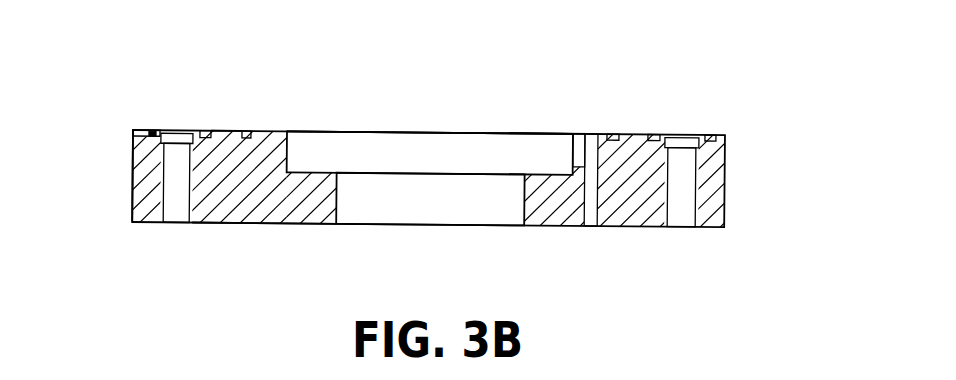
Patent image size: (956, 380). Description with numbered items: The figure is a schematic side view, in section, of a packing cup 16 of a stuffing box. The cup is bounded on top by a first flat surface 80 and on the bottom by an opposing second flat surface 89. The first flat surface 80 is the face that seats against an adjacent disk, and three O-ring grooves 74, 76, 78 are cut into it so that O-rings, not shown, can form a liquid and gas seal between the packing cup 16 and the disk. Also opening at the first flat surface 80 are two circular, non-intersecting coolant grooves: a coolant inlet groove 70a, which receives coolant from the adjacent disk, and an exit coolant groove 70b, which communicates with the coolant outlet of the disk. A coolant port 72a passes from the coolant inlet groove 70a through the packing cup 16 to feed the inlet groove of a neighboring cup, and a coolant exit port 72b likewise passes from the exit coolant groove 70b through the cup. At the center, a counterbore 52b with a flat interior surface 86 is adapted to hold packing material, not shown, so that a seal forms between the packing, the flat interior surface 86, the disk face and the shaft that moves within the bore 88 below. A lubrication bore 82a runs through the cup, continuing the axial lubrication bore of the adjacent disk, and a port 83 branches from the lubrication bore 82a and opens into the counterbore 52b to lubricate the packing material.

The packing cup 16 is at (753, 175).
The O-ring groove 74 is at (134, 138).
The exit coolant groove 70b is at (173, 134).
The coolant exit port 72b is at (177, 208).
The O-ring groove 76 is at (202, 130).
The first flat surface 80 is at (228, 129).
The O-ring groove 78 is at (247, 130).
The flat interior surface 86 is at (308, 172).
The counterbore 52b is at (573, 139).
The port 83 is at (572, 151).
The bore 88 is at (407, 225).
The second flat surface 89 is at (265, 223).
The lubrication bore 82a is at (591, 226).
The coolant inlet groove 70a is at (683, 138).
The coolant port 72a is at (682, 213).